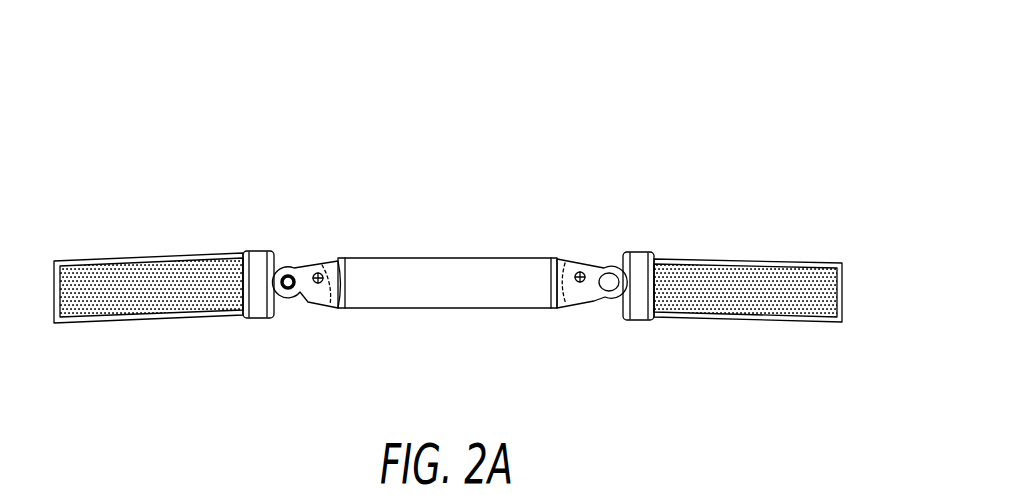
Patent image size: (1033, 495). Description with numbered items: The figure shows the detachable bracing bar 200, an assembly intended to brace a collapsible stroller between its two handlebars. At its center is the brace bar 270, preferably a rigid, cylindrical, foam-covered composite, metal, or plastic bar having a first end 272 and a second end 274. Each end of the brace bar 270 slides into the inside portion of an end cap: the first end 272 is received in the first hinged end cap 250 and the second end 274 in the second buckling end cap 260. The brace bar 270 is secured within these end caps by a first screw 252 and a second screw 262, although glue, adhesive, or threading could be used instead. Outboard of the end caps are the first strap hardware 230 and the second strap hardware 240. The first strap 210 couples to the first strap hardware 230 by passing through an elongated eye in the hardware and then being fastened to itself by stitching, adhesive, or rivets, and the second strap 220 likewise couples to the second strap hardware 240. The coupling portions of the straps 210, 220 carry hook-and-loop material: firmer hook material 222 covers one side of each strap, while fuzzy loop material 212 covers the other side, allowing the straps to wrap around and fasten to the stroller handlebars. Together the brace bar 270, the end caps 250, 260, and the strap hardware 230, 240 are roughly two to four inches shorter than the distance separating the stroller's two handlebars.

The detachable bracing bar 200 is at (606, 107).
The first strap 210 is at (136, 260).
The loop material 212 is at (172, 296).
The second strap 220 is at (718, 258).
The hook material 222 is at (748, 293).
The first strap hardware 230 is at (258, 252).
The second strap hardware 240 is at (644, 322).
The first hinged end cap 250 is at (311, 273).
The first screw 252 is at (310, 303).
The second buckling end cap 260 is at (603, 290).
The second screw 262 is at (594, 304).
The brace bar 270 is at (458, 295).
The first end 272 is at (328, 288).
The second end 274 is at (576, 284).